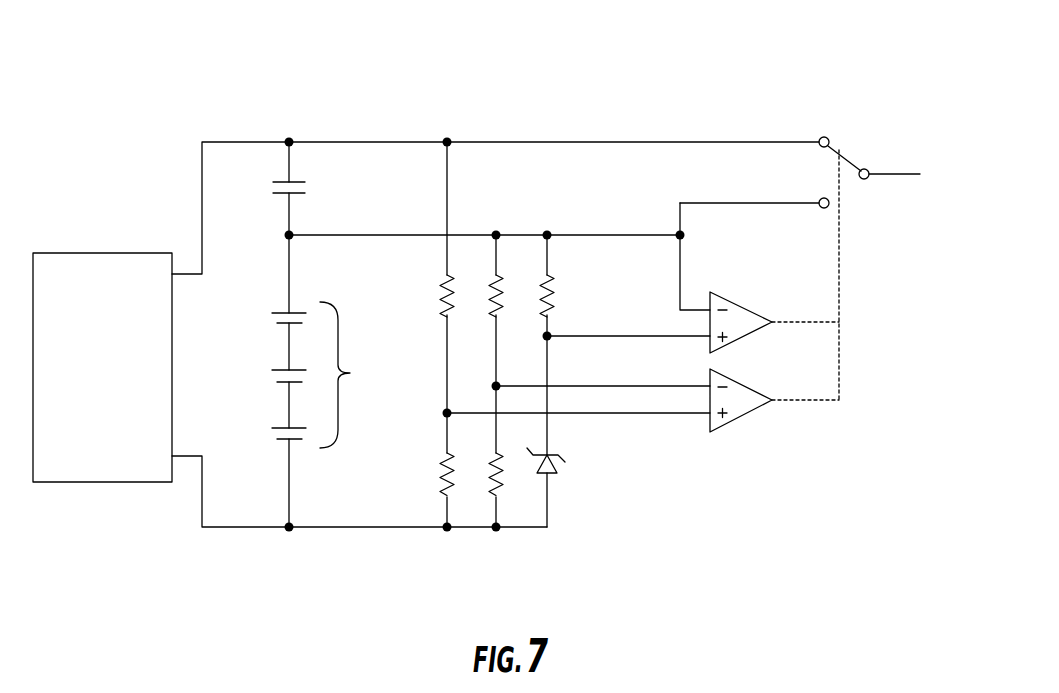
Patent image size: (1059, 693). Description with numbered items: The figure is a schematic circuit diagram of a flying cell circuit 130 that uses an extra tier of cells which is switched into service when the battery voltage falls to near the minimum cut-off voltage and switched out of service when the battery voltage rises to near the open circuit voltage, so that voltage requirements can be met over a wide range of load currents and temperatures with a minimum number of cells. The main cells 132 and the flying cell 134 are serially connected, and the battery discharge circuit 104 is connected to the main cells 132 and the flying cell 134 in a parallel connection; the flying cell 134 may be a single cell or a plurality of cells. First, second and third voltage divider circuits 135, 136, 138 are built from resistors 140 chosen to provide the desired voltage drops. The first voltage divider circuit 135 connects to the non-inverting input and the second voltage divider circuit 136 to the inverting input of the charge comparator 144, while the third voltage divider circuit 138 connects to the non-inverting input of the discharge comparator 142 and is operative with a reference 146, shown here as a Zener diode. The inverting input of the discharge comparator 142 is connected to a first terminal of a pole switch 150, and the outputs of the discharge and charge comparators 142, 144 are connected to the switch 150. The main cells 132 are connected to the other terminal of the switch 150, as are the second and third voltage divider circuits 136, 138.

The battery discharge circuit 104 is at (76, 253).
The flying cell circuit 130 is at (568, 93).
The main cells 132 is at (270, 407).
The flying cell 134 is at (300, 183).
The first voltage divider circuit 135 is at (438, 376).
The second voltage divider circuit 136 is at (493, 388).
The third voltage divider circuit 138 is at (566, 318).
The resistors 140 is at (548, 278).
The discharge comparator 142 is at (742, 322).
The charge comparator 144 is at (735, 402).
The reference 146 is at (552, 472).
The pole switch 150 is at (848, 150).